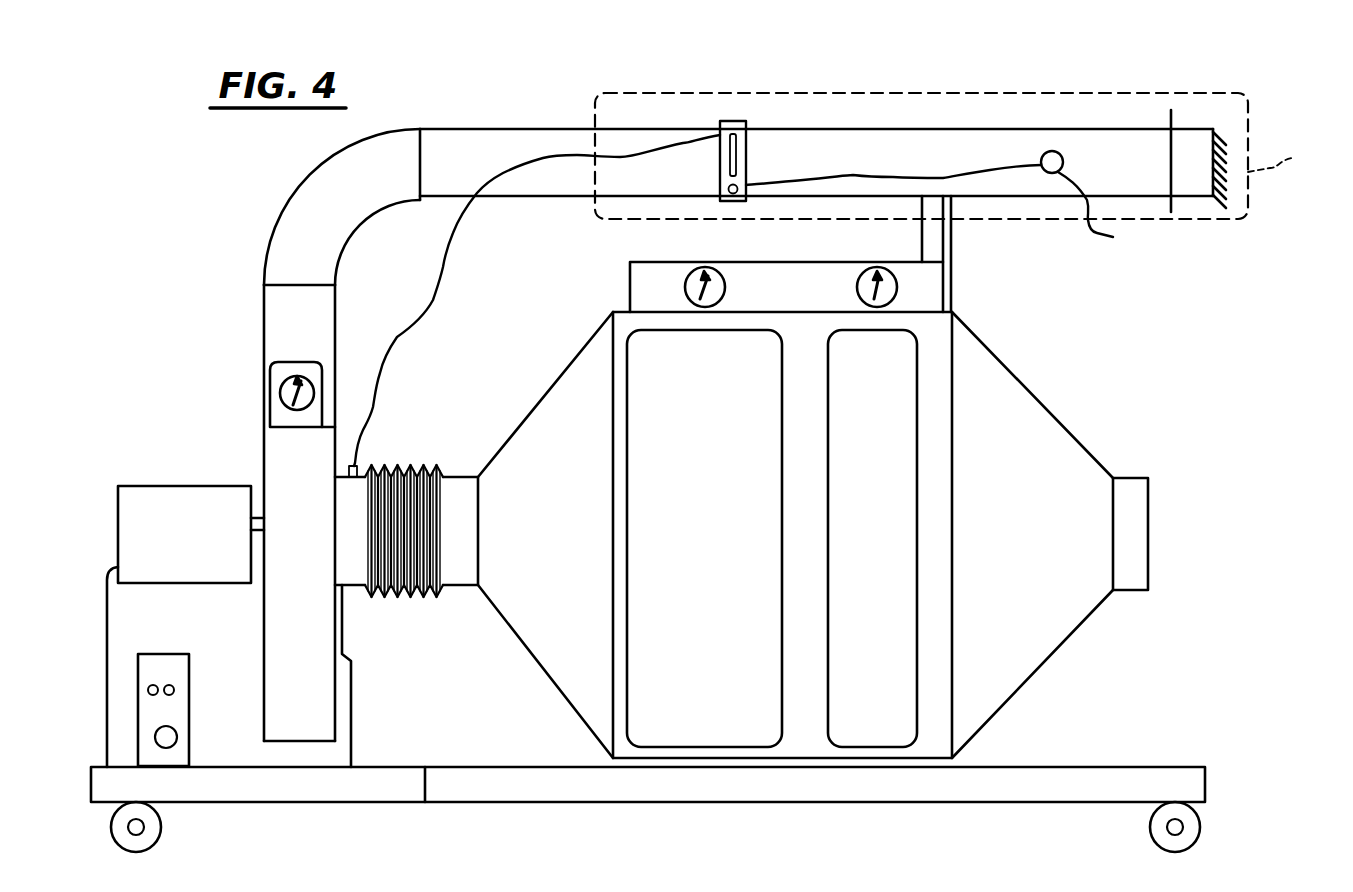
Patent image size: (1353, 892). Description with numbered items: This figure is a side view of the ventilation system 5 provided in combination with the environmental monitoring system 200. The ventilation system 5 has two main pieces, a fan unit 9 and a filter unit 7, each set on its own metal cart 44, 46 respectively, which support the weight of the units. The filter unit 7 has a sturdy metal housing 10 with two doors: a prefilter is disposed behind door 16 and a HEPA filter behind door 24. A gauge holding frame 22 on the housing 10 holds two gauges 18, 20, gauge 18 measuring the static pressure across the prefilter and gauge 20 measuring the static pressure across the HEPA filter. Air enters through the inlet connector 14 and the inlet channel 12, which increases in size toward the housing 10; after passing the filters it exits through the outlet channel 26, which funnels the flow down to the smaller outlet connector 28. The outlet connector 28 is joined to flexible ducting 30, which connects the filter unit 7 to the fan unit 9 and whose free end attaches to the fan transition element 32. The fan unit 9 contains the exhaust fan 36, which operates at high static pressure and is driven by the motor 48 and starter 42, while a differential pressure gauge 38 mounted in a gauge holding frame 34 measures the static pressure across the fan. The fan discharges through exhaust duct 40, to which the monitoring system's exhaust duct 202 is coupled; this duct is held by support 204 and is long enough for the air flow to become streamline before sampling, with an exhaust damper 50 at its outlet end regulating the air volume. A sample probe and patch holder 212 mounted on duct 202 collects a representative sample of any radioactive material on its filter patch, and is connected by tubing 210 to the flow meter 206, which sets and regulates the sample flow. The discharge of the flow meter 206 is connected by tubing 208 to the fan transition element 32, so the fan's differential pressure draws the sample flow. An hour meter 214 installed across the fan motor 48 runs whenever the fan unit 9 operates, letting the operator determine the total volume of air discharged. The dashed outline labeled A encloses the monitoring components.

The ventilation system 5 is at (1240, 479).
The filter unit 7 is at (1080, 436).
The fan unit 9 is at (208, 447).
The housing 10 is at (813, 453).
The inlet channel 12 is at (1025, 662).
The inlet connector 14 is at (1132, 580).
The door 16 is at (898, 465).
The gauge 18 is at (877, 267).
The gauge 20 is at (705, 267).
The gauge holding frame 22 is at (797, 277).
The door 24 is at (598, 393).
The outlet channel 26 is at (530, 413).
The outlet connector 28 is at (457, 588).
The flexible ducting 30 is at (403, 597).
The fan transition element 32 is at (347, 601).
The gauge holding frame 34 is at (312, 418).
The exhaust fan 36 is at (262, 467).
The differential pressure gauge 38 is at (270, 390).
The exhaust duct 40 is at (262, 300).
The starter 42 is at (189, 668).
The cart 44 is at (393, 767).
The cart 46 is at (1162, 767).
The motor 48 is at (173, 507).
The exhaust damper 50 is at (1213, 129).
The environmental monitoring system 200 is at (828, 81).
The exhaust duct 202 is at (565, 129).
The support 204 is at (952, 230).
The flow meter 206 is at (740, 121).
The tubing 208 is at (446, 248).
The tubing 210 is at (893, 177).
The sample probe and patch holder 212 is at (1101, 198).
The hour meter 214 is at (177, 737).
The region A is at (1281, 155).